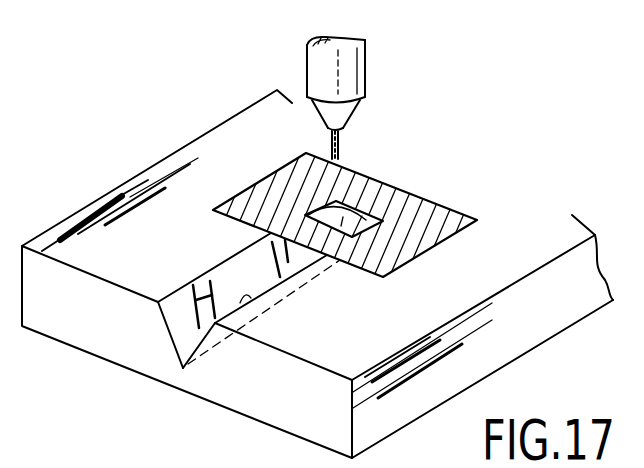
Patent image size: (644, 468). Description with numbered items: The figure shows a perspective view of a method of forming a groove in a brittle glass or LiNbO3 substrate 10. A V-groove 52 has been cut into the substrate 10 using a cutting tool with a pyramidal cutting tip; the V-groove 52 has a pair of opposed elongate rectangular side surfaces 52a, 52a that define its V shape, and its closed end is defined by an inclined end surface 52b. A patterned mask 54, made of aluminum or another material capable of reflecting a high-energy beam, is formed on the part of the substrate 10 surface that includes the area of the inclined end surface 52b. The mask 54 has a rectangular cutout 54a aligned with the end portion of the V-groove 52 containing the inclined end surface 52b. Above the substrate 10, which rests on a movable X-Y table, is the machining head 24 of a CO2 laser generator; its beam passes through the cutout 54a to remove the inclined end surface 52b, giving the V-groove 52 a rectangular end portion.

The substrate 10 is at (110, 348).
The machining head 24 is at (308, 75).
The V-groove 52 is at (183, 272).
The side surfaces 52a is at (238, 258).
The inclined end surface 52b is at (386, 266).
The patterned mask 54 is at (462, 214).
The rectangular cutout 54a is at (368, 210).